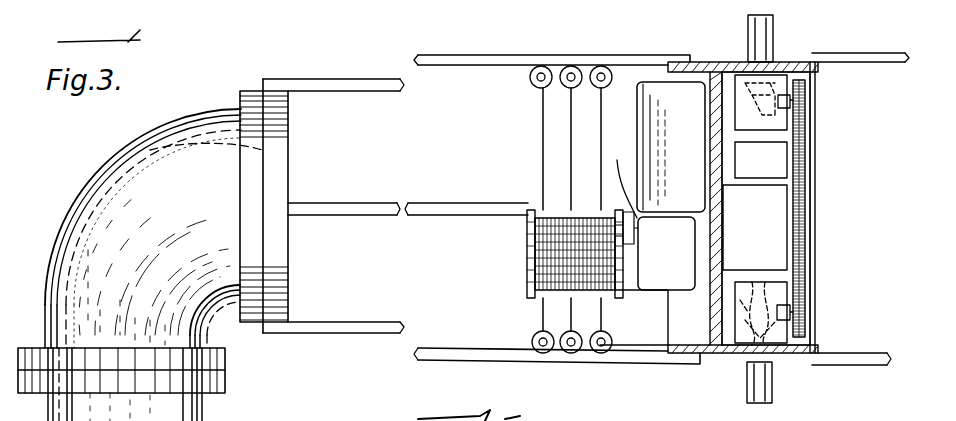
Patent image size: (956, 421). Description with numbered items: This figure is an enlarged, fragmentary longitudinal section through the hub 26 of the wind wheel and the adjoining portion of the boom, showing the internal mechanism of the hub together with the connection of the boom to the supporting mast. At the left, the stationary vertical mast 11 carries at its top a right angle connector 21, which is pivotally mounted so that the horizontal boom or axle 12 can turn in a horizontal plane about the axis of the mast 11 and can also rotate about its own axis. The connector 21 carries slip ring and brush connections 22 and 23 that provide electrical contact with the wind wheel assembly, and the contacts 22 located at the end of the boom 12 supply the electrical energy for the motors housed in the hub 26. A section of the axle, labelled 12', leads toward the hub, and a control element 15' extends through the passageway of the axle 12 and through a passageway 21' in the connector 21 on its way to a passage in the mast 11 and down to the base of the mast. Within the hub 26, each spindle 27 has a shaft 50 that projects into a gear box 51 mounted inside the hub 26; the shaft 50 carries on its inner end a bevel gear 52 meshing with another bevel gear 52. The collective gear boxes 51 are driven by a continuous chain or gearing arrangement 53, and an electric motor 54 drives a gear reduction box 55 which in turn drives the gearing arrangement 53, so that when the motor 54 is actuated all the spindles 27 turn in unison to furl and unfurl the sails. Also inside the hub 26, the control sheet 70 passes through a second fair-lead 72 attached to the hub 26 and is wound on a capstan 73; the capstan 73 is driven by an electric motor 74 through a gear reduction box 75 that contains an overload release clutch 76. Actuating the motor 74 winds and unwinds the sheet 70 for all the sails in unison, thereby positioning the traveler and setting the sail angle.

The stationary vertical mast 11 is at (200, 404).
The horizontal boom or axle 12 is at (656, 209).
The pipe section 12' is at (333, 178).
The control element 15' is at (408, 192).
The right angle connector 21 is at (143, 228).
The passageway in connector 21' is at (246, 153).
The slip ring and brush connections 22 is at (270, 244).
The slip ring and brush connections 23 is at (212, 360).
The hub 26 is at (787, 63).
The spindle 27 is at (748, 35).
The shaft 50 is at (752, 367).
The gear box 51 is at (740, 318).
The bevel gear 52 is at (768, 266).
The gearing arrangement 53 is at (810, 240).
The electric motor 54 is at (768, 222).
The gear reduction box 55 is at (771, 154).
The control sheet 70 is at (545, 152).
The second fair-lead 72 is at (566, 89).
The capstan 73 is at (536, 272).
The electric motor 74 is at (683, 148).
The gear reduction box 75 is at (680, 275).
The overload release clutch 76 is at (621, 172).